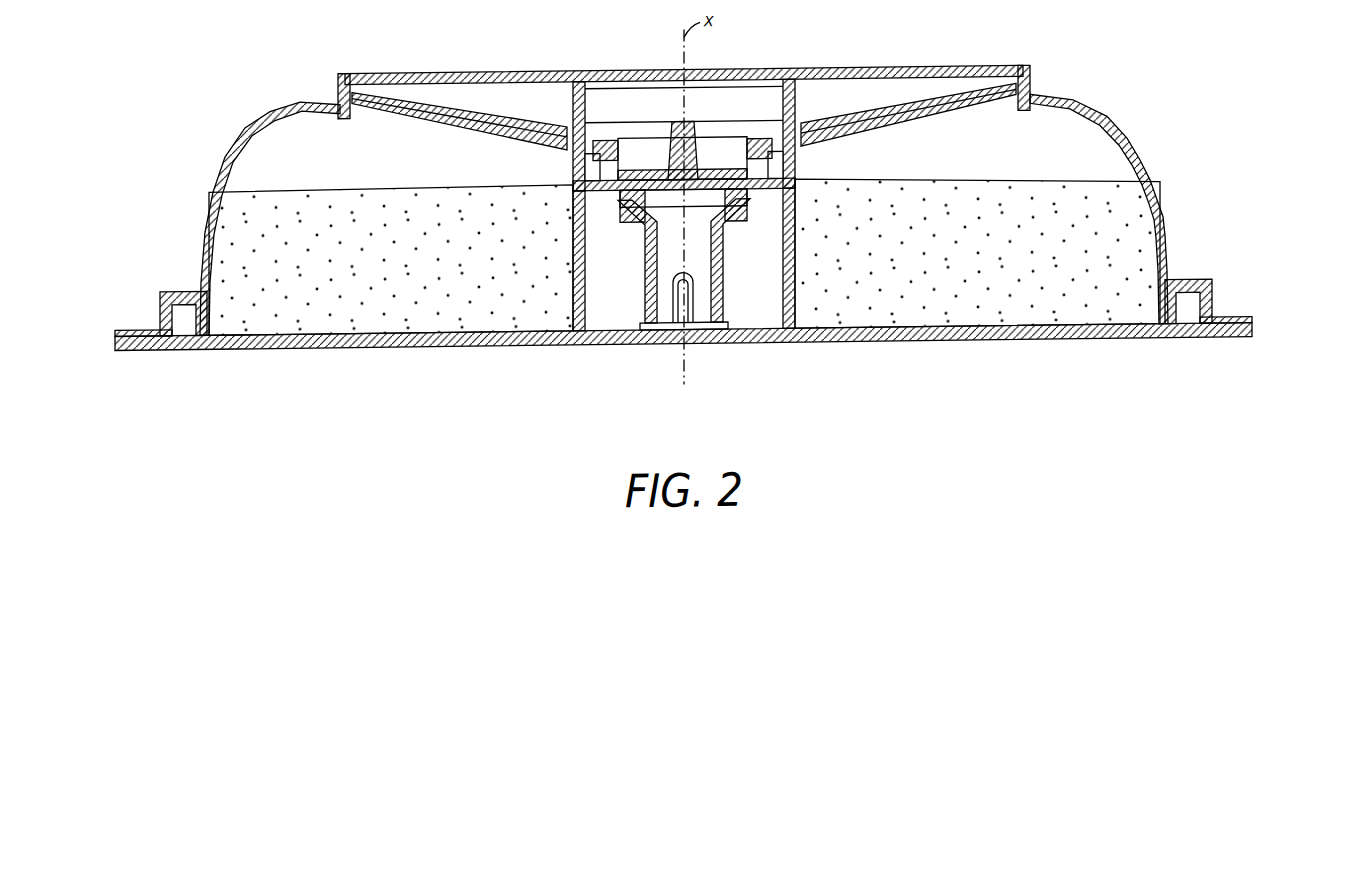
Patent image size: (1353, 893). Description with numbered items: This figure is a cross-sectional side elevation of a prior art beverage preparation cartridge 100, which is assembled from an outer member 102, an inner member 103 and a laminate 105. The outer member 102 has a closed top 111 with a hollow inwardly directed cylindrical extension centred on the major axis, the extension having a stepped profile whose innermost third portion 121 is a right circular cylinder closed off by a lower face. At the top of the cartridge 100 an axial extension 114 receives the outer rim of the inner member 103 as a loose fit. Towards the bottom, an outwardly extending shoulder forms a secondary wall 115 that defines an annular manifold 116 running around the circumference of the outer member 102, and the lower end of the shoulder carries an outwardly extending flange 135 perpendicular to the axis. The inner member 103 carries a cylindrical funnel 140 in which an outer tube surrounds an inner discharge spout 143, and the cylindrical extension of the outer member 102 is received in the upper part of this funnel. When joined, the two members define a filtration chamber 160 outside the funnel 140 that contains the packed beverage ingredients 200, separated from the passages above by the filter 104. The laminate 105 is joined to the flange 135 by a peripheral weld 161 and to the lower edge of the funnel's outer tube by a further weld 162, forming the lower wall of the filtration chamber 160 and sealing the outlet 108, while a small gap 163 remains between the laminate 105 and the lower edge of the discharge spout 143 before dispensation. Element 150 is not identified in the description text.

The beverage preparation cartridge 100 is at (1103, 86).
The outer member 102 is at (1125, 140).
The inner member 103 is at (797, 166).
The filter 104 is at (905, 128).
The laminate 105 is at (1135, 347).
The outlet 108 is at (656, 328).
The closed top 111 is at (450, 73).
The axial extension 114 is at (340, 81).
The secondary wall 115 is at (165, 289).
The manifold 116 is at (185, 331).
The third portion 121 is at (630, 143).
The outwardly extending flange 135 is at (1232, 328).
The cylindrical funnel 140 is at (796, 297).
The discharge spout 143 is at (652, 283).
The valve stem 150 is at (704, 191).
The filtration chamber 160 is at (280, 148).
The weld 161 is at (1253, 344).
The weld 162 is at (573, 323).
The gap 163 is at (705, 334).
The beverage ingredients 200 is at (335, 324).